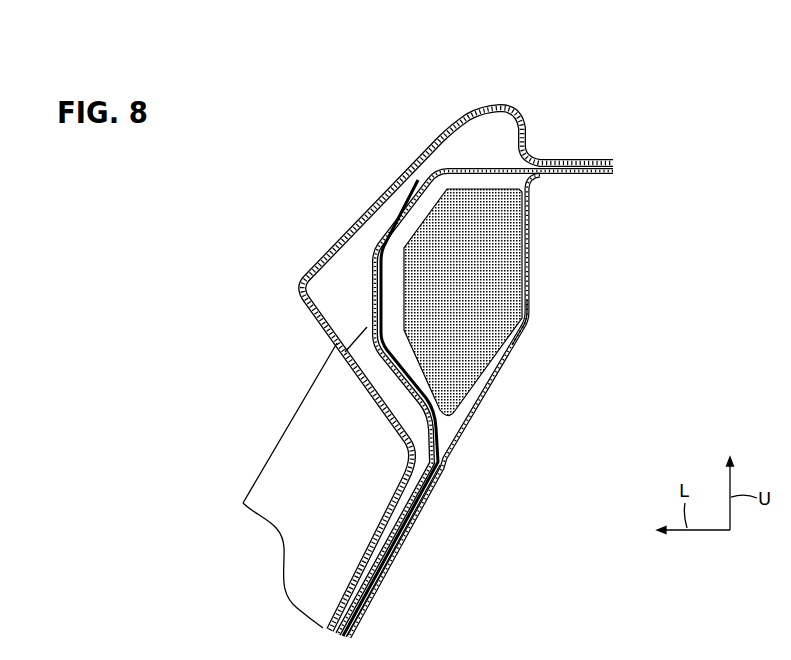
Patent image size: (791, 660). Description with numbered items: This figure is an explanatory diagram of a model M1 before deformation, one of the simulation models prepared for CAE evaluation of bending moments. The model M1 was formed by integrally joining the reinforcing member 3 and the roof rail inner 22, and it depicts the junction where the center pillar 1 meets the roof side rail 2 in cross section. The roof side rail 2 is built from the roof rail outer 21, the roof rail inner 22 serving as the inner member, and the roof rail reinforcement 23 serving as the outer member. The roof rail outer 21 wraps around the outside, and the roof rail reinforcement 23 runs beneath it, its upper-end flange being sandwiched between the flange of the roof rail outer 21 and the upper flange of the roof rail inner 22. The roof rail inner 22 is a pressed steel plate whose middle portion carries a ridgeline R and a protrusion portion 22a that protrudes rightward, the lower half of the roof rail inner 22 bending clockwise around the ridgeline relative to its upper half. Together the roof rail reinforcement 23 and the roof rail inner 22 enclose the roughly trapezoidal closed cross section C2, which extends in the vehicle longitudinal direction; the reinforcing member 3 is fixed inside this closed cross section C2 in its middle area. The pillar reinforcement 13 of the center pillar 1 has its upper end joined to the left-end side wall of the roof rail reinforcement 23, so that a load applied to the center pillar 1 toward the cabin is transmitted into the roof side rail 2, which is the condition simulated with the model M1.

The center pillar 1 is at (276, 451).
The roof side rail 2 is at (467, 349).
The reinforcing member 3 is at (469, 291).
The pillar reinforcement 13 is at (368, 258).
The roof side rail outer panel 21 is at (365, 202).
The roof side rail inner panel 22 is at (529, 237).
The protrusion portion 22a is at (528, 319).
The roof side rail reinforcement 23 is at (467, 167).
The closed cross section C2 is at (448, 426).
The model M1 is at (577, 103).